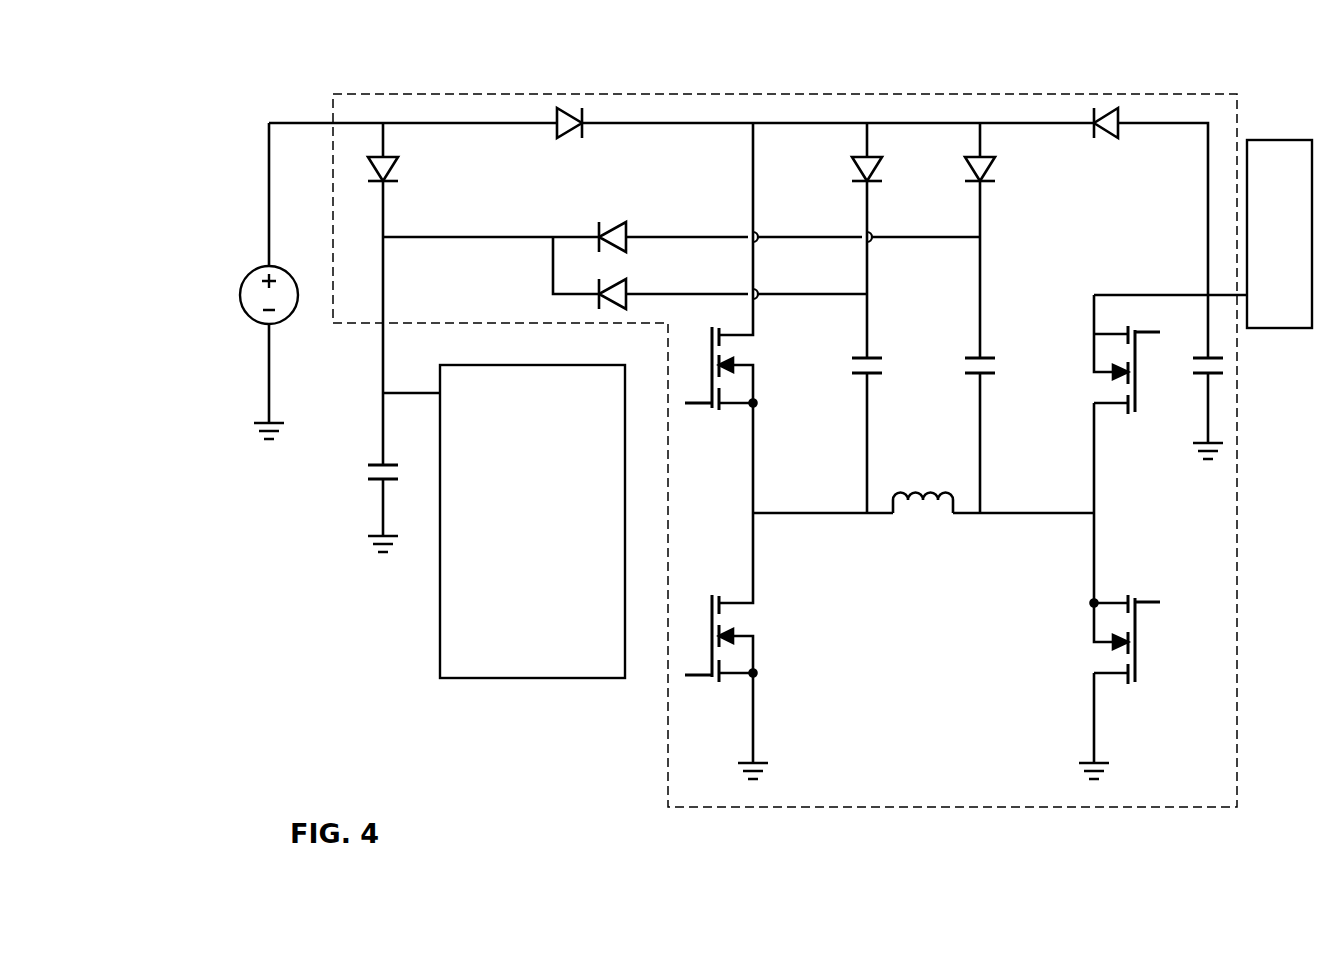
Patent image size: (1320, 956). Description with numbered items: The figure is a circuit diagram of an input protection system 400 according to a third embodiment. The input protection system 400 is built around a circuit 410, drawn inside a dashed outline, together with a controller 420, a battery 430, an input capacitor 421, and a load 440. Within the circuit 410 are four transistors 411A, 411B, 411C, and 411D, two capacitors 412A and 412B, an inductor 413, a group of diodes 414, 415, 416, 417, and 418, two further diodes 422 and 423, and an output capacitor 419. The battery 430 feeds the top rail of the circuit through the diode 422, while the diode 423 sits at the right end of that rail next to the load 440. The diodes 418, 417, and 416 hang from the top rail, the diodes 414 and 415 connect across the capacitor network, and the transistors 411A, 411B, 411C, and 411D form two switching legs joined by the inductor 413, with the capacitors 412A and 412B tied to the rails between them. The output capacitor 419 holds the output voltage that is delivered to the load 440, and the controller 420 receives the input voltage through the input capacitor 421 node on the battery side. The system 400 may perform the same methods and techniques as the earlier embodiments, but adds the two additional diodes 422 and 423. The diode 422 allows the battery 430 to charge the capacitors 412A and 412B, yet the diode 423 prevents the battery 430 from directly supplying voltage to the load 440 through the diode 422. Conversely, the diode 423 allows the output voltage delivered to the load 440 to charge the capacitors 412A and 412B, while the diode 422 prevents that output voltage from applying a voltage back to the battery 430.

The input protection system 400 is at (1252, 103).
The circuit 410 is at (990, 95).
The transistor 411A is at (1108, 333).
The transistor 411B is at (1108, 603).
The transistor 411C is at (750, 333).
The transistor 411D is at (750, 603).
The capacitor 412A is at (987, 357).
The capacitor 412B is at (874, 357).
The inductor 413 is at (898, 490).
The diode 414 is at (622, 225).
The diode 415 is at (622, 284).
The diode 416 is at (985, 158).
The diode 417 is at (872, 158).
The diode 418 is at (388, 158).
The output capacitor 419 is at (1216, 357).
The controller 420 is at (470, 365).
The input capacitor 421 is at (378, 463).
The diode 422 is at (570, 140).
The diode 423 is at (1108, 140).
The battery 430 is at (281, 267).
The load 440 is at (1266, 140).